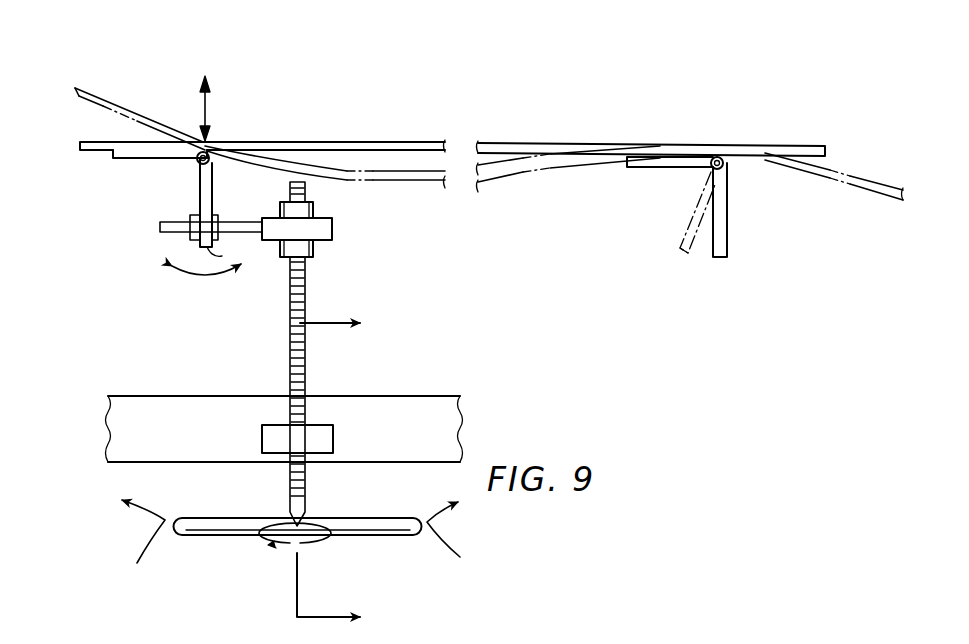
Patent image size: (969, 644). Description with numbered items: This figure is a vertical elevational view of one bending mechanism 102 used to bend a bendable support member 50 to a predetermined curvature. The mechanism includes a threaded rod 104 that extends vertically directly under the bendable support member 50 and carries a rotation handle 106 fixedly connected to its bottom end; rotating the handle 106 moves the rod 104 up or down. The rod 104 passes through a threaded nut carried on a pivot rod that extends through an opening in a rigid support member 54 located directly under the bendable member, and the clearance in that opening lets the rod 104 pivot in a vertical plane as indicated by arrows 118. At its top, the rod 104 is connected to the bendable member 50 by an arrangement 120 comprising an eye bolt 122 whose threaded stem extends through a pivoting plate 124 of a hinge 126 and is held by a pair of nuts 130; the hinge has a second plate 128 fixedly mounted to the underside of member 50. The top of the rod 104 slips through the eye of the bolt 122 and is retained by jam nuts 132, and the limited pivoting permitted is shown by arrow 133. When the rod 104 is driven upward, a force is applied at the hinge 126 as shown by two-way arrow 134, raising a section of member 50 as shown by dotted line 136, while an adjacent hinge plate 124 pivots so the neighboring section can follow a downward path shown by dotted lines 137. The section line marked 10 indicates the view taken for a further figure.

The bendable support member 50 is at (312, 140).
The dotted line 136 is at (137, 100).
The two-way arrow 134 is at (208, 110).
The second plate 128 is at (155, 154).
The pivoting plate 124 is at (213, 202).
The dotted lines 137 is at (865, 172).
The hinge 126 is at (160, 182).
The nuts 130 is at (207, 252).
The eye bolt 122 is at (238, 233).
The jam nuts 132 is at (332, 212).
The threaded rod 104 is at (308, 283).
The arrow 133 is at (207, 276).
The arrangement 120 is at (160, 276).
The bending mechanism 102 is at (175, 331).
The rigid support member 54 is at (170, 394).
The rotation handle 106 is at (240, 522).
The arrows 118 is at (295, 543).
The section line 10 is at (356, 473).